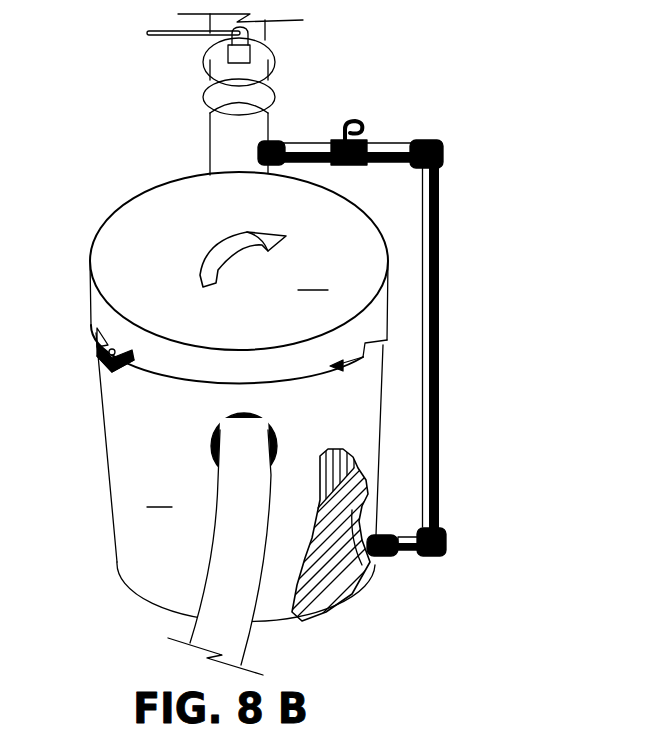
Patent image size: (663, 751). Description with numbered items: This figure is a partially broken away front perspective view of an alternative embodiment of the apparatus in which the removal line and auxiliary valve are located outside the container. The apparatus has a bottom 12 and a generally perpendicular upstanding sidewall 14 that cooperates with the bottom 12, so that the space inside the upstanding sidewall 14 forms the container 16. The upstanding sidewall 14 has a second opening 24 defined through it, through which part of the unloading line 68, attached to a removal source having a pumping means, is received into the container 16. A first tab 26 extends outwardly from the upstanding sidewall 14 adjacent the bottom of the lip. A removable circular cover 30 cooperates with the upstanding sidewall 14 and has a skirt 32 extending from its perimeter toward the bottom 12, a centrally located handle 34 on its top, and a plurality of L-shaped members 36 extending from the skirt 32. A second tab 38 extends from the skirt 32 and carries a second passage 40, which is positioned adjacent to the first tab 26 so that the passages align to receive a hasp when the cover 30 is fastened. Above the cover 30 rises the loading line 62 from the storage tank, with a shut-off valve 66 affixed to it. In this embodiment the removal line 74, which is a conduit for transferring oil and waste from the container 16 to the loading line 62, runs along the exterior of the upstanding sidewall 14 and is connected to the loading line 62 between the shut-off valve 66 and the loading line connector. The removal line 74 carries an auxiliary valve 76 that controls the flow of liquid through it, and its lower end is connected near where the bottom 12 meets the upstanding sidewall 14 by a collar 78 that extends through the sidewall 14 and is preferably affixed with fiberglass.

The bottom 12 is at (325, 602).
The upstanding sidewall 14 is at (105, 488).
The container 16 is at (159, 497).
The second opening 24 is at (263, 420).
The first tab 26 is at (100, 362).
The removable circular cover 30 is at (239, 261).
The skirt 32 is at (218, 371).
The handle 34 is at (233, 230).
The L-shaped members 36 is at (353, 367).
The second tab 38 is at (97, 346).
The second passage 40 is at (117, 347).
The loading line 62 is at (268, 32).
The shut-off valve 66 is at (277, 79).
The unloading line 68 is at (210, 553).
The removal line 74 is at (443, 268).
The auxiliary valve 76 is at (367, 120).
The collar 78 is at (388, 560).